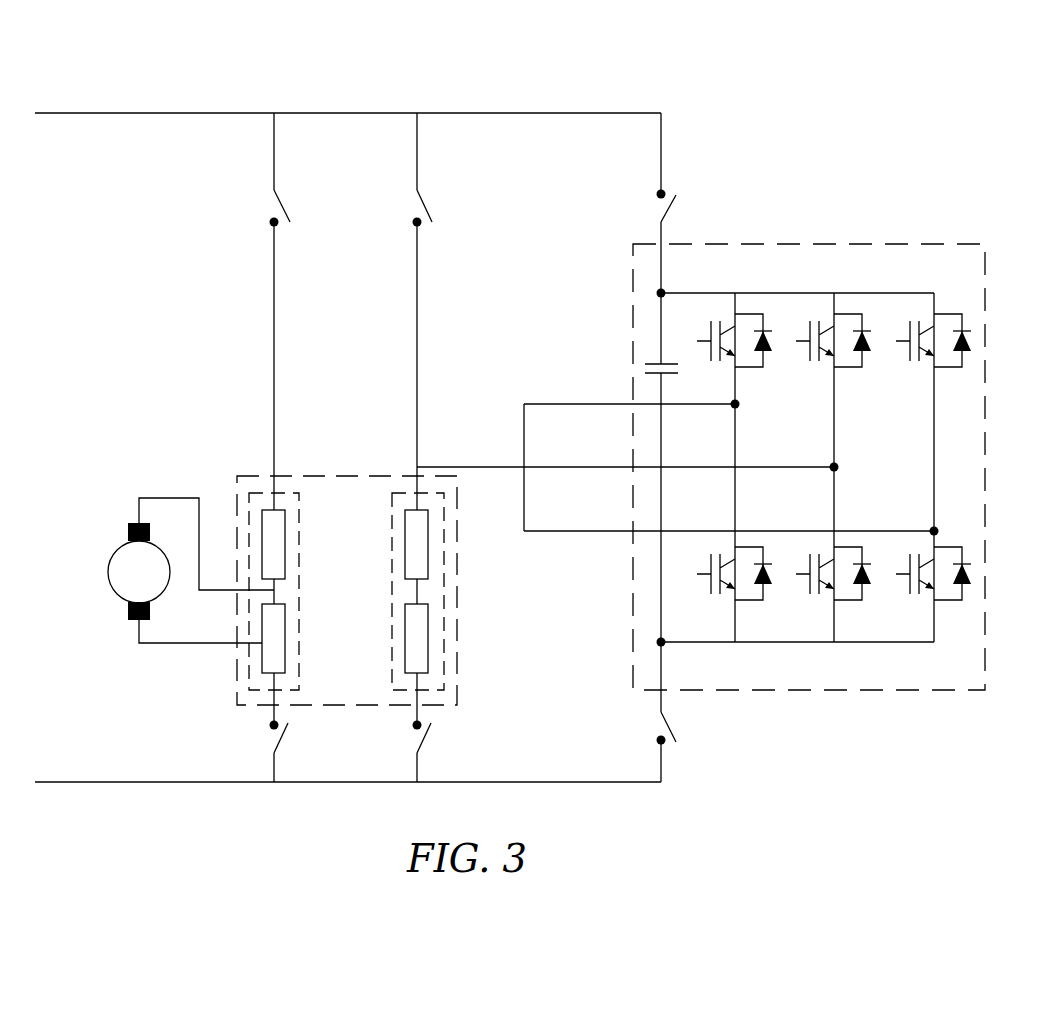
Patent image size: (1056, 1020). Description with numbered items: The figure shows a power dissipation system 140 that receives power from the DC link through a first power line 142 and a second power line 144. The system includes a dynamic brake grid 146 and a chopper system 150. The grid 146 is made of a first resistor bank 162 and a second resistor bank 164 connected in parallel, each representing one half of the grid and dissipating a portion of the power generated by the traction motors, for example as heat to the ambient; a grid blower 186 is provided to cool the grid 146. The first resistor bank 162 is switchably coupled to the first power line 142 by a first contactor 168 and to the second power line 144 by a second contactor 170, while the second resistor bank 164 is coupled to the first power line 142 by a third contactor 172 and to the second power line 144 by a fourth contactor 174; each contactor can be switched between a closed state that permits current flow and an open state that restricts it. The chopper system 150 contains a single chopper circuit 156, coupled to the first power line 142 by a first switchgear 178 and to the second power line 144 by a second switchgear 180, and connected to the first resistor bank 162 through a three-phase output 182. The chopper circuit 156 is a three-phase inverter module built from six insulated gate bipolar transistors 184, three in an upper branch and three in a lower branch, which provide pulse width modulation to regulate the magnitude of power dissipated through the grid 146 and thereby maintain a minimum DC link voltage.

The power dissipation system 140 is at (878, 118).
The first power line 142 is at (97, 113).
The second power line 144 is at (97, 782).
The dynamic brake grid 146 is at (457, 647).
The chopper system 150 is at (942, 245).
The chopper circuit 156 is at (860, 293).
The first resistor bank 162 is at (392, 538).
The second resistor bank 164 is at (300, 643).
The first contactor 168 is at (427, 207).
The second contactor 170 is at (425, 738).
The third contactor 172 is at (284, 207).
The fourth contactor 174 is at (282, 738).
The first switchgear 178 is at (670, 210).
The second switchgear 180 is at (672, 725).
The three-phase output 182 is at (542, 403).
The insulated gate bipolar transistors 184 is at (755, 367).
The grid blower 186 is at (116, 546).